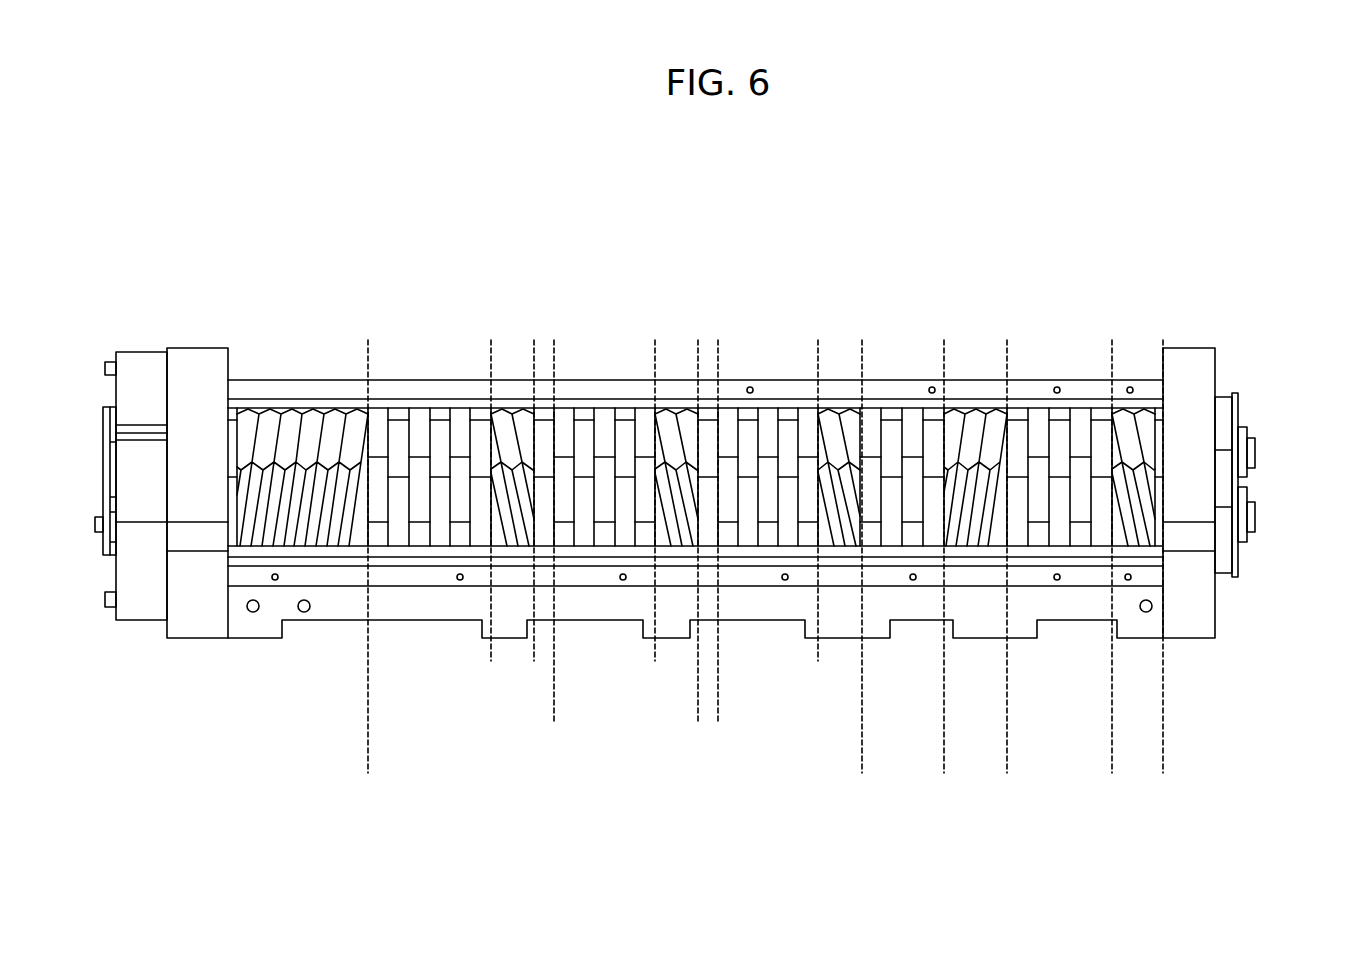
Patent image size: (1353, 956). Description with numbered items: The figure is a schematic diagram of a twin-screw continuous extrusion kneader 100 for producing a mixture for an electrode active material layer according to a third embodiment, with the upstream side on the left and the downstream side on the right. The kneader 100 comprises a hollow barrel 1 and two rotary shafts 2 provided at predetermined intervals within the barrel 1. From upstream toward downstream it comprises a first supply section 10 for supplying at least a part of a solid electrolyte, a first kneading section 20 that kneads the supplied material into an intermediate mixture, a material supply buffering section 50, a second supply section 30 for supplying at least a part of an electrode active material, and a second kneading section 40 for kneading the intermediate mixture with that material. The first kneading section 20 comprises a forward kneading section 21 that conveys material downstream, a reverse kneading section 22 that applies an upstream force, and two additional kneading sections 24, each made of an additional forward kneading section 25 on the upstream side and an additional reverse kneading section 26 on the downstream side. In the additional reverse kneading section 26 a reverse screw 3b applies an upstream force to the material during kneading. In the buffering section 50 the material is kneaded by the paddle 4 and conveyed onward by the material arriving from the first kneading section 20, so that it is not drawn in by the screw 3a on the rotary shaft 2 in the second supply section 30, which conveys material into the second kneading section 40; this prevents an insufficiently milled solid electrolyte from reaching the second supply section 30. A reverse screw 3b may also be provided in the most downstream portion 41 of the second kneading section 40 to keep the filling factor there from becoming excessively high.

The twin-screw continuous extrusion kneader 100 is at (123, 263).
The barrel 1 is at (195, 362).
The rotary shaft 2 is at (1256, 455).
The screw 3a is at (306, 432).
The reverse screw 3b is at (504, 432).
The paddle 4 is at (418, 432).
The first supply section 10 is at (228, 765).
The first kneading section 20 is at (368, 773).
The forward kneading section 21 is at (368, 653).
The reverse kneading section 22 is at (491, 661).
The additional kneading section 24 is at (790, 728).
The additional forward kneading section 25 is at (770, 666).
The additional reverse kneading section 26 is at (842, 666).
The second supply section 30 is at (944, 773).
The second kneading section 40 is at (1007, 773).
The most downstream portion 41 is at (1112, 773).
The material supply buffering section 50 is at (862, 773).